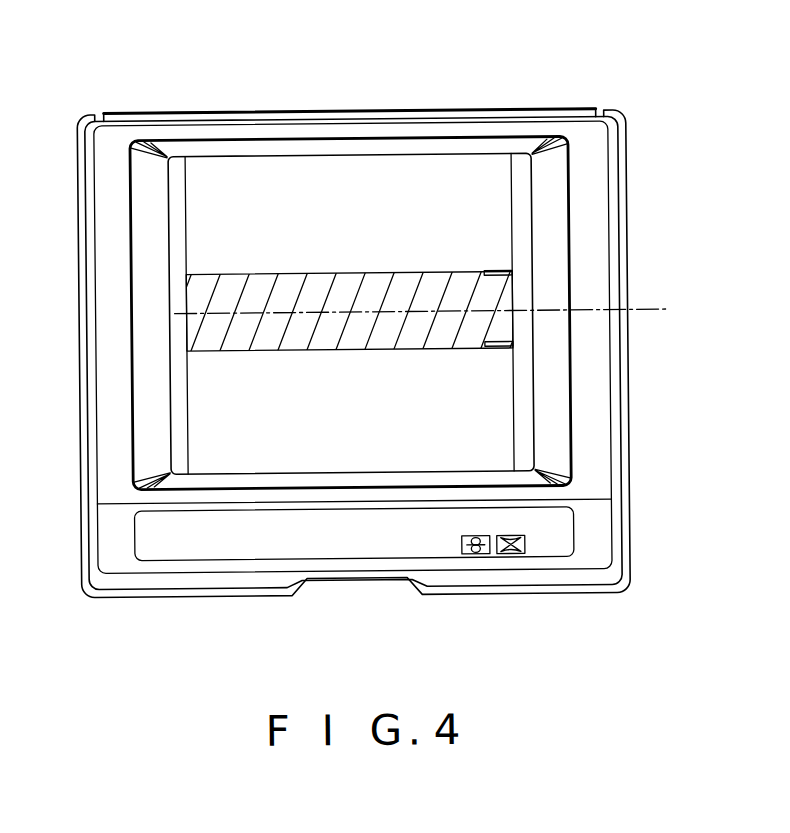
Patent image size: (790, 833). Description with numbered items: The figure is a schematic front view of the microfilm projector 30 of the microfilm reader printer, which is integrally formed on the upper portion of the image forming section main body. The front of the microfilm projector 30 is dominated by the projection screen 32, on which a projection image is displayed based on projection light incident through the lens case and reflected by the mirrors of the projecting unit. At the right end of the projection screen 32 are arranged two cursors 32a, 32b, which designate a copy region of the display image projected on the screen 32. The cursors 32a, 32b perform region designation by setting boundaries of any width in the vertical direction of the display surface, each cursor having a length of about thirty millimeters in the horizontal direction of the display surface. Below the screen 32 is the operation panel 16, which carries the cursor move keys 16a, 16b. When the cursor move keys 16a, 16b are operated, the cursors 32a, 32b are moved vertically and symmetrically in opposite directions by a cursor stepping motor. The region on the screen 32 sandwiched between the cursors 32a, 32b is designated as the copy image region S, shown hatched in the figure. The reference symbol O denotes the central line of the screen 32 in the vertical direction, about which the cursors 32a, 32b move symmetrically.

The microfilm projector 30 is at (410, 110).
The projection screen 32 is at (296, 168).
The cursor 32a is at (513, 272).
The cursor 32b is at (513, 346).
The copy image region S is at (197, 301).
The central line O is at (667, 312).
The operation panel 16 is at (198, 549).
The cursor move key 16a is at (462, 556).
The cursor move key 16b is at (523, 553).